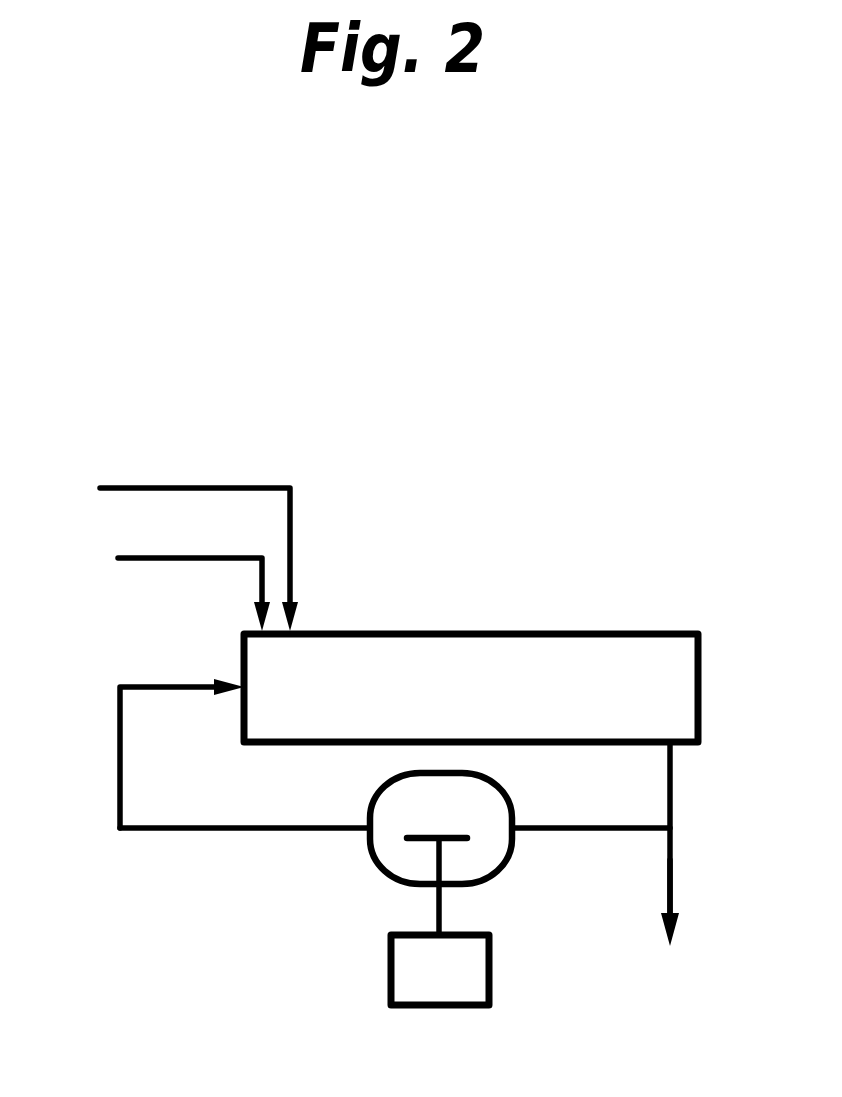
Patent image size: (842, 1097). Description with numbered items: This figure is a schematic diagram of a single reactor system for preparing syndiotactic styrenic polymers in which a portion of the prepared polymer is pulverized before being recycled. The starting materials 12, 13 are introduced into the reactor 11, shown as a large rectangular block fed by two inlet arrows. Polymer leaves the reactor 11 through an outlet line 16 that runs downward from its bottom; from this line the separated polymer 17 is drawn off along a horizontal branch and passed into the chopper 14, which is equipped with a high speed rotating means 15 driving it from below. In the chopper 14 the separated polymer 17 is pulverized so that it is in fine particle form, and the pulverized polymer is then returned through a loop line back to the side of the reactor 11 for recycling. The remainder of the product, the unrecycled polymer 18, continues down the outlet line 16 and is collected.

The reactor 11 is at (636, 580).
The starting material 12 is at (161, 583).
The starting material 13 is at (174, 546).
The chopper 14 is at (385, 876).
The high speed rotating means 15 is at (388, 978).
The outlet line 16 is at (736, 790).
The separated polymer 17 is at (564, 860).
The unrecycled polymer 18 is at (716, 912).